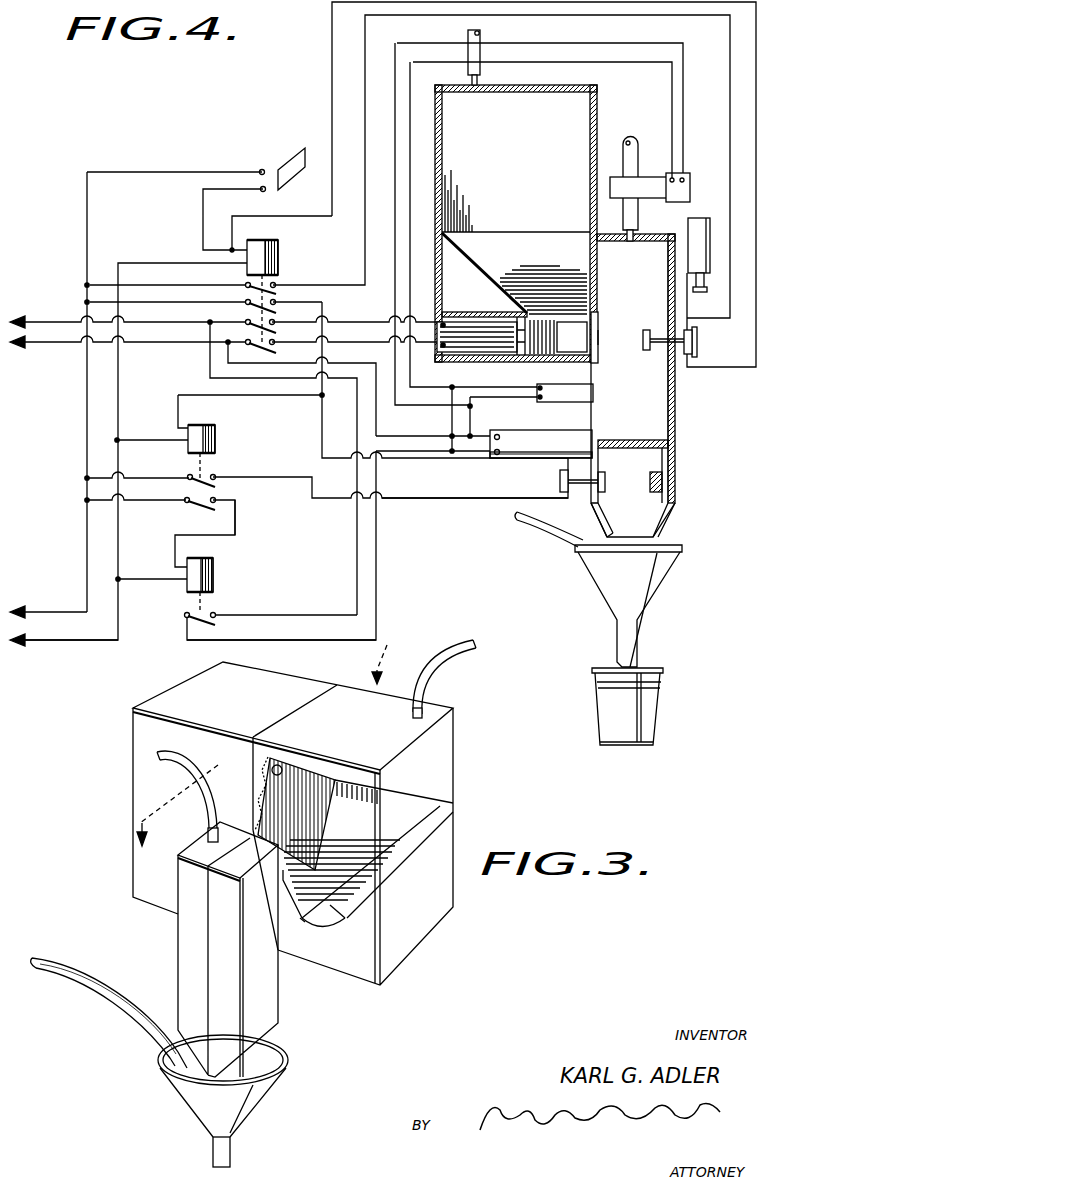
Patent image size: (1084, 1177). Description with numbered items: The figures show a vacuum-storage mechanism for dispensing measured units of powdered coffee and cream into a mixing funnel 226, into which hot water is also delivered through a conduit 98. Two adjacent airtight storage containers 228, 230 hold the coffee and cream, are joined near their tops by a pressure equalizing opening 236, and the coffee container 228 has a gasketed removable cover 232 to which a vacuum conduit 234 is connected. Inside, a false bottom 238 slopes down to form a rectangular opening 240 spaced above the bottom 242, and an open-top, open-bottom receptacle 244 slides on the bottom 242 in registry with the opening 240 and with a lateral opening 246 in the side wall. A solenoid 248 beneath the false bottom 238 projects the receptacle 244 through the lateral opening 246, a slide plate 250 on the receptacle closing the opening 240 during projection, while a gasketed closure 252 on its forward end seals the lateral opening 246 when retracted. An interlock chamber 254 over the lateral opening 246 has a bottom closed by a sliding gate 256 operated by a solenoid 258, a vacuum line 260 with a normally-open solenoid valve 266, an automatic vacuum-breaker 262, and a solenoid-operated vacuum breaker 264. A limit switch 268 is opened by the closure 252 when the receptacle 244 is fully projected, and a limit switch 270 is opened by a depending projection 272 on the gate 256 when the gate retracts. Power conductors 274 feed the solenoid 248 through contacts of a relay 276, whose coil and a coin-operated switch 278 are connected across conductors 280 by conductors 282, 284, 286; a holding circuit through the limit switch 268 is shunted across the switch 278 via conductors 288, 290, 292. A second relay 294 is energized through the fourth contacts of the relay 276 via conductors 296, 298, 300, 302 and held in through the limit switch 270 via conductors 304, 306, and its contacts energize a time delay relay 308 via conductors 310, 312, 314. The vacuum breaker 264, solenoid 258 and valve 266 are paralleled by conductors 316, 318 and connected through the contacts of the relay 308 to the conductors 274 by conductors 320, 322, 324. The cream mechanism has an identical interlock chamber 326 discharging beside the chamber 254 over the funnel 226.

In FIG. 3, the conduit 98 is at (88, 998).
In FIG. 4, the mixing funnel 226 is at (660, 590).
In FIG. 3, the mixing funnel 226 is at (257, 1093).
In FIG. 4, the coffee container 228 is at (600, 120).
In FIG. 3, the coffee container 228 is at (455, 758).
In FIG. 3, the cream container 230 is at (133, 748).
In FIG. 4, the removable cover 232 is at (568, 85).
In FIG. 3, the removable cover 232 is at (358, 747).
In FIG. 4, the vacuum conduit 234 is at (482, 32).
In FIG. 3, the vacuum conduit 234 is at (447, 662).
In FIG. 3, the pressure equalizing opening 236 is at (278, 765).
In FIG. 4, the false bottom 238 is at (515, 245).
In FIG. 3, the false bottom 238 is at (400, 822).
In FIG. 4, the rectangular opening 240 is at (540, 317).
In FIG. 3, the rectangular opening 240 is at (296, 912).
In FIG. 4, the bottom 242 is at (520, 357).
In FIG. 4, the receptacle 244 is at (568, 357).
In FIG. 3, the receptacle 244 is at (305, 920).
In FIG. 4, the lateral opening 246 is at (600, 330).
In FIG. 4, the solenoid 248 is at (455, 360).
In FIG. 3, the solenoid 248 is at (335, 902).
In FIG. 4, the slide plate 250 is at (480, 315).
In FIG. 4, the gasketed closure 252 is at (600, 337).
In FIG. 4, the interlock chamber 254 is at (677, 407).
In FIG. 3, the interlock chamber 254 is at (258, 1000).
In FIG. 4, the sliding gate 256 is at (600, 350).
In FIG. 4, the solenoid 258 is at (508, 430).
In FIG. 4, the vacuum line 260 is at (643, 162).
In FIG. 4, the automatic vacuum-breaker 262 is at (698, 217).
In FIG. 4, the solenoid-operated vacuum breaker 264 is at (590, 421).
In FIG. 4, the solenoid valve 266 is at (647, 198).
In FIG. 4, the limit switch 268 is at (700, 341).
In FIG. 4, the limit switch 270 is at (557, 483).
In FIG. 4, the depending projection 272 is at (673, 475).
In FIG. 4, the conductors 274 is at (63, 345).
In FIG. 4, the relay 276 is at (282, 257).
In FIG. 4, the coin-operated switch 278 is at (265, 167).
In FIG. 4, the conductors 280 is at (46, 645).
In FIG. 4, the conductor 282 is at (143, 263).
In FIG. 4, the conductor 284 is at (203, 207).
In FIG. 4, the conductor 286 is at (142, 172).
In FIG. 4, the conductor 288 is at (160, 285).
In FIG. 4, the conductor 290 is at (306, 285).
In FIG. 4, the conductor 292 is at (332, 86).
In FIG. 4, the relay 294 is at (217, 438).
In FIG. 4, the conductor 296 is at (147, 440).
In FIG. 4, the conductor 298 is at (189, 392).
In FIG. 4, the conductor 300 is at (320, 430).
In FIG. 4, the conductor 302 is at (160, 302).
In FIG. 4, the conductor 304 is at (421, 500).
In FIG. 4, the conductor 306 is at (138, 477).
In FIG. 4, the time delay relay 308 is at (217, 570).
In FIG. 4, the conductor 310 is at (143, 502).
In FIG. 4, the conductor 312 is at (235, 517).
In FIG. 4, the conductor 314 is at (137, 582).
In FIG. 4, the conductor 316 is at (412, 392).
In FIG. 4, the conductor 318 is at (458, 418).
In FIG. 4, the conductor 320 is at (343, 368).
In FIG. 4, the conductor 322 is at (378, 568).
In FIG. 4, the conductor 324 is at (355, 547).
In FIG. 3, the interlock chamber 326 is at (175, 977).